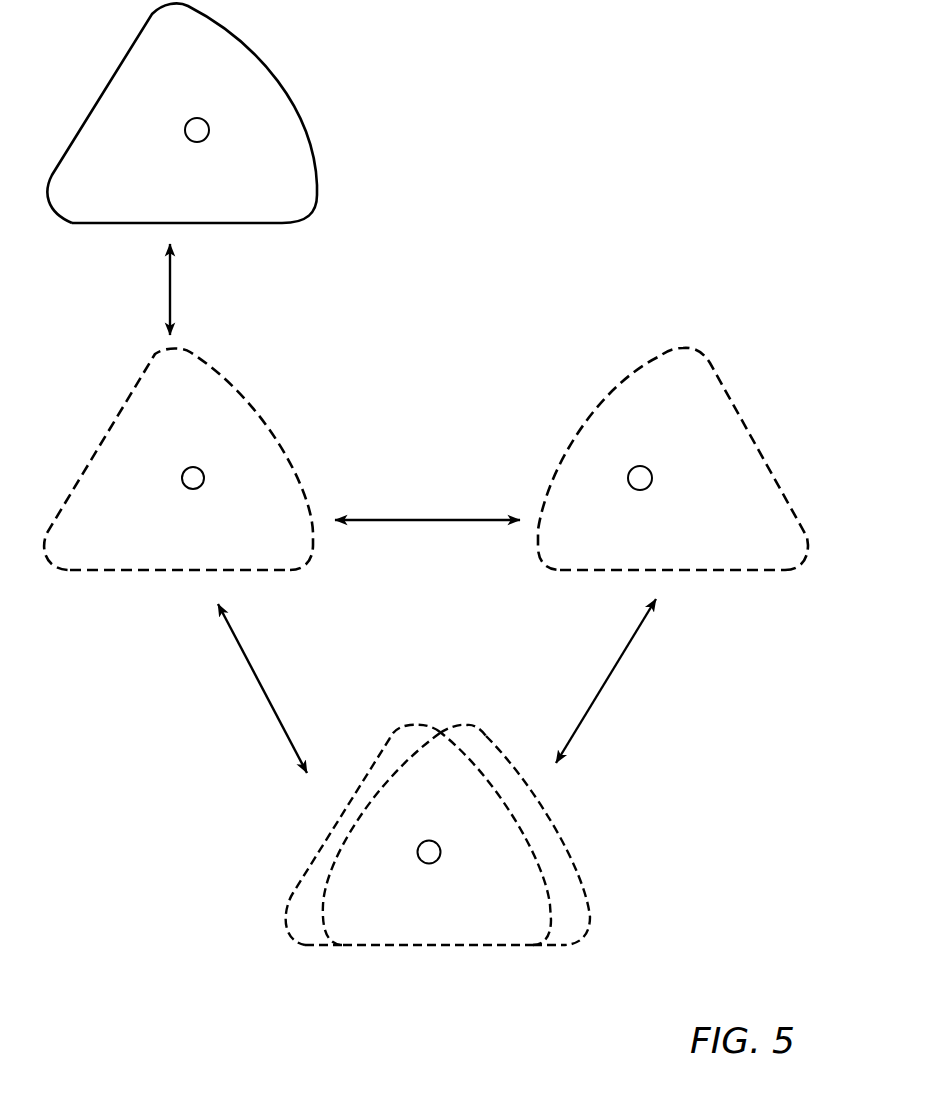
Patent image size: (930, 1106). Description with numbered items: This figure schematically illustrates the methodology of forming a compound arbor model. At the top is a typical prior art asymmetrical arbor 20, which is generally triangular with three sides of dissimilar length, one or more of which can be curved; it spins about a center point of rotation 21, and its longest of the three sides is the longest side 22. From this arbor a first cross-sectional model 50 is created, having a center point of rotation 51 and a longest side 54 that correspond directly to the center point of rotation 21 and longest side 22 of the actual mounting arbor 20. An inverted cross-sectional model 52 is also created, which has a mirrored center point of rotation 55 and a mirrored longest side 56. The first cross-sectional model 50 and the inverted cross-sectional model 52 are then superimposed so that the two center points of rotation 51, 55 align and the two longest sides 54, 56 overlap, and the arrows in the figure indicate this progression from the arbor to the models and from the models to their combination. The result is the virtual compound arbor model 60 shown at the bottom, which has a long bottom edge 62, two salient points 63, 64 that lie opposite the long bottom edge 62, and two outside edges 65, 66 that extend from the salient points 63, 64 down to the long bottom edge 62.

The asymmetrical arbor 20 is at (297, 118).
The center point of rotation 21 is at (209, 133).
The longest side 22 is at (203, 225).
The first cross-sectional model 50 is at (260, 413).
The center point of rotation 51 is at (185, 472).
The inverted cross-sectional model 52 is at (757, 443).
The longest side 54 is at (163, 570).
The mirrored center point of rotation 55 is at (629, 476).
The mirrored longest side 56 is at (683, 570).
The compound arbor model 60 is at (424, 835).
The long bottom edge 62 is at (460, 947).
The salient point 63 is at (413, 723).
The salient point 64 is at (470, 725).
The outside edge 65 is at (293, 878).
The outside edge 66 is at (568, 872).